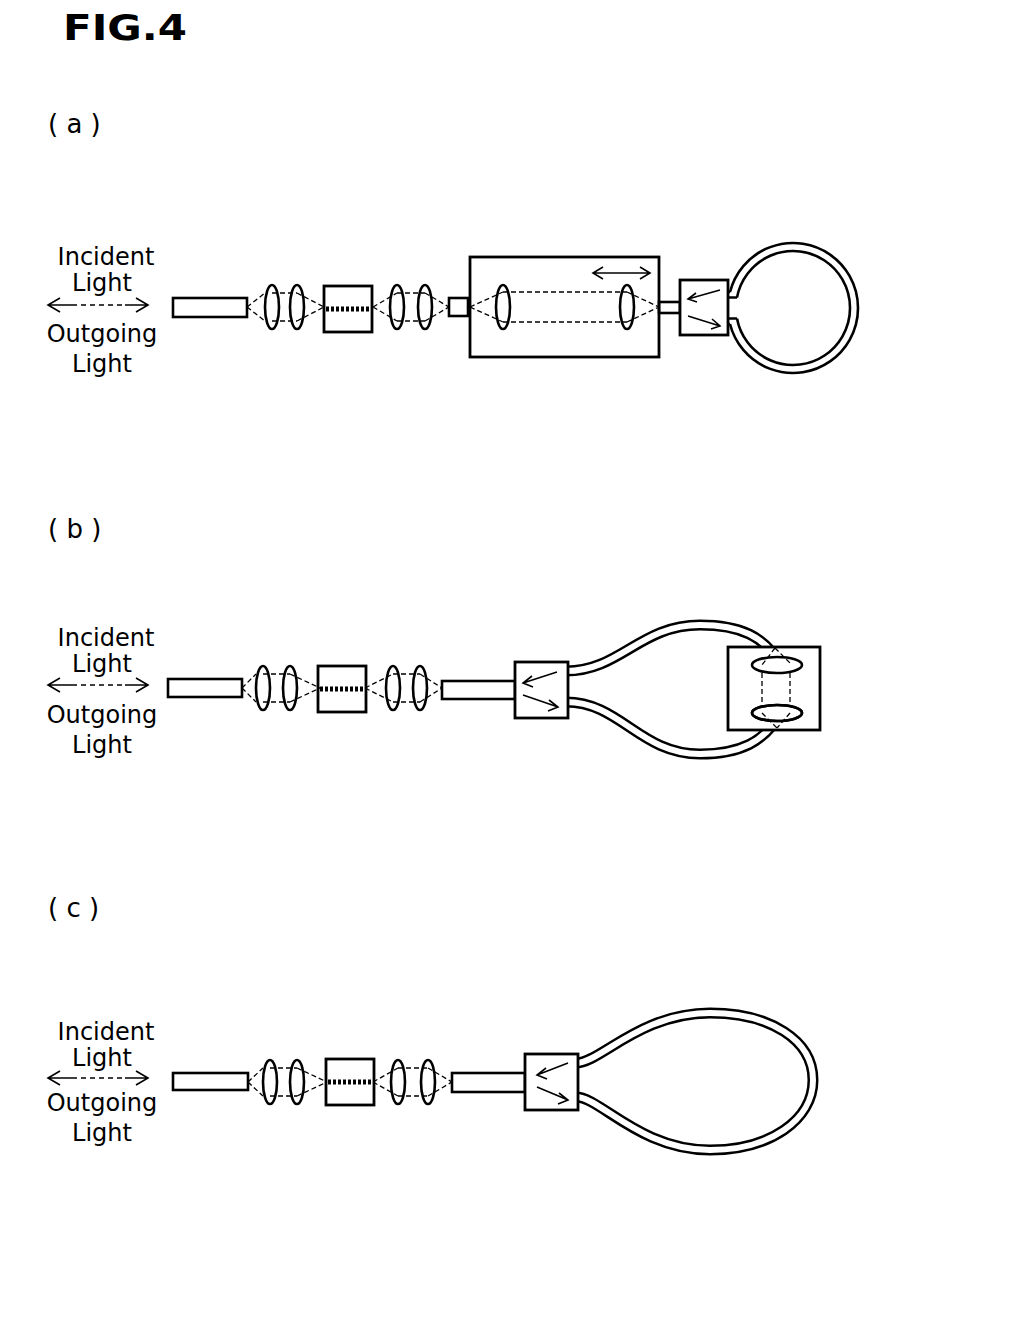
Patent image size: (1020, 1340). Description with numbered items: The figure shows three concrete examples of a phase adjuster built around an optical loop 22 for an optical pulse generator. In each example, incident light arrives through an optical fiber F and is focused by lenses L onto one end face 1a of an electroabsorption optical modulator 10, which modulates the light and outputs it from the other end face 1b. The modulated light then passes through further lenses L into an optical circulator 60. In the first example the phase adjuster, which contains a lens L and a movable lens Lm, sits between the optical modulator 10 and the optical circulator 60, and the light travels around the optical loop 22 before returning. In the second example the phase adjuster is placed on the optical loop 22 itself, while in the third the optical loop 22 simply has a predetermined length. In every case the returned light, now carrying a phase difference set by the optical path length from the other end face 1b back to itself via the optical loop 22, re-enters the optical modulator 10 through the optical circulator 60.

The optical fiber F is at (209, 305).
The lens L is at (272, 286).
The electroabsorption optical modulator 10 is at (340, 282).
The one end face 1a is at (328, 333).
The other end face 1b is at (374, 330).
The movable lens Lm is at (627, 328).
The optical circulator 60 is at (694, 277).
The optical loop 22 is at (830, 362).